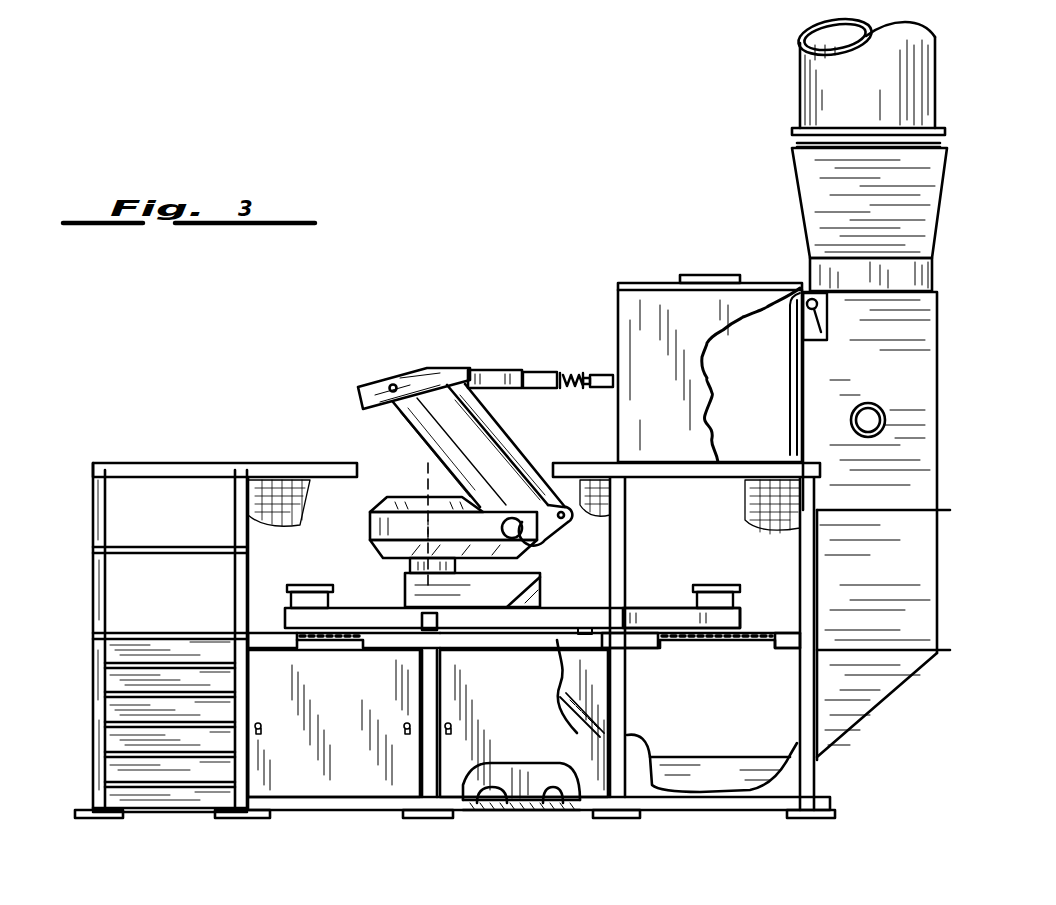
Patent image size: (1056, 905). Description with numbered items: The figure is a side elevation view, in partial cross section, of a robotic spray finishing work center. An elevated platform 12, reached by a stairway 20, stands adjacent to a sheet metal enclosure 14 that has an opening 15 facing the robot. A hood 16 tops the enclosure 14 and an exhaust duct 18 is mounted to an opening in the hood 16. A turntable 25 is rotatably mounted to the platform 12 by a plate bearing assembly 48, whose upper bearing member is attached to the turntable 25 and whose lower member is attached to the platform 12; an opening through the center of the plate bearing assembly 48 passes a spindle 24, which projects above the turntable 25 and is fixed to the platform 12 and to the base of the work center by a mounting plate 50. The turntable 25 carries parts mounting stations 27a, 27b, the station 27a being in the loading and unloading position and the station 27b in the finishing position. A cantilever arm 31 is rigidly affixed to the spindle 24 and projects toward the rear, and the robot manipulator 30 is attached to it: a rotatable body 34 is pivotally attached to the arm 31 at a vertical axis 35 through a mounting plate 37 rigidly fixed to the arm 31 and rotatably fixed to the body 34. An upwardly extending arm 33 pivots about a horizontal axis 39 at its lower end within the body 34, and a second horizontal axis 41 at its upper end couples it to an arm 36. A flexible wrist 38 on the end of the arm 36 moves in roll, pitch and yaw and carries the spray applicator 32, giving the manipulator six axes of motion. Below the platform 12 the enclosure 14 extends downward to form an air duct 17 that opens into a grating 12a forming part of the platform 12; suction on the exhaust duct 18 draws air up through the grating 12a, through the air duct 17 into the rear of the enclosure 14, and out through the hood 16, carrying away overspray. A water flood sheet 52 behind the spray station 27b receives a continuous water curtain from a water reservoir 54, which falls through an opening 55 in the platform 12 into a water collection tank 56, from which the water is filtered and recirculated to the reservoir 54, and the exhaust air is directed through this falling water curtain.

The elevated platform 12 is at (270, 632).
The grating 12a is at (710, 648).
The enclosure 14 is at (940, 362).
The opening 15 is at (617, 305).
The hood 16 is at (945, 197).
The air duct 17 is at (570, 700).
The exhaust duct 18 is at (938, 72).
The stairway 20 is at (165, 660).
The spindle 24 is at (485, 802).
The turntable 25 is at (655, 606).
The parts mounting station 27a is at (300, 585).
The parts mounting station 27b is at (717, 585).
The robot manipulator 30 is at (411, 483).
The cantilever arm 31 is at (520, 573).
The spray applicator 32 is at (603, 370).
The arm 33 is at (458, 443).
The rotatable body 34 is at (380, 507).
The vertical axis 35 is at (432, 530).
The arm 36 is at (487, 370).
The mounting plate 37 is at (408, 563).
The flexible wrist mechanism 38 is at (572, 370).
The horizontal axis 39 is at (530, 535).
The second horizontal axis 41 is at (393, 387).
The plate bearing assembly 48 is at (583, 635).
The mounting plate 50 is at (565, 805).
The water flood sheet 52 is at (790, 370).
The water reservoir 54 is at (802, 290).
The opening 55 is at (785, 645).
The water collection tank 56 is at (680, 775).